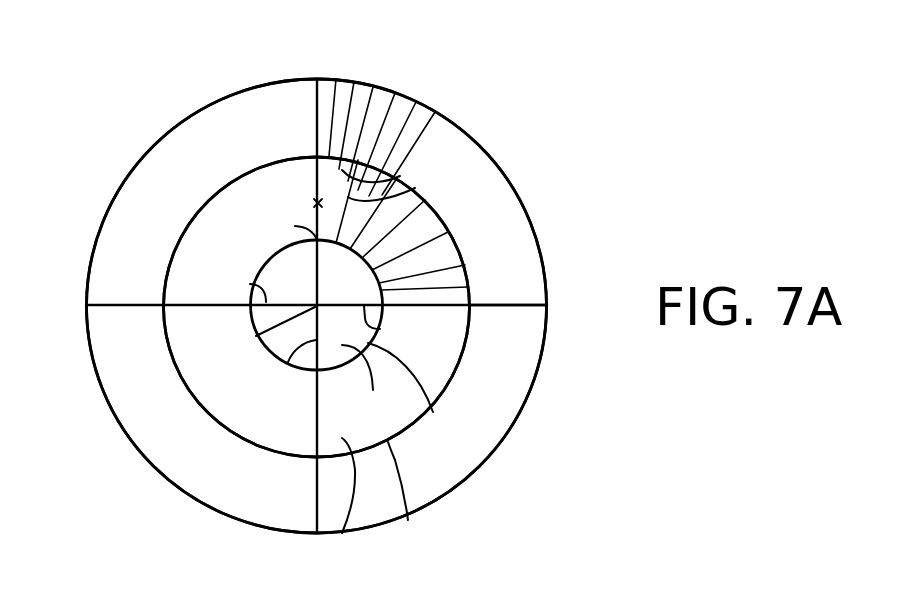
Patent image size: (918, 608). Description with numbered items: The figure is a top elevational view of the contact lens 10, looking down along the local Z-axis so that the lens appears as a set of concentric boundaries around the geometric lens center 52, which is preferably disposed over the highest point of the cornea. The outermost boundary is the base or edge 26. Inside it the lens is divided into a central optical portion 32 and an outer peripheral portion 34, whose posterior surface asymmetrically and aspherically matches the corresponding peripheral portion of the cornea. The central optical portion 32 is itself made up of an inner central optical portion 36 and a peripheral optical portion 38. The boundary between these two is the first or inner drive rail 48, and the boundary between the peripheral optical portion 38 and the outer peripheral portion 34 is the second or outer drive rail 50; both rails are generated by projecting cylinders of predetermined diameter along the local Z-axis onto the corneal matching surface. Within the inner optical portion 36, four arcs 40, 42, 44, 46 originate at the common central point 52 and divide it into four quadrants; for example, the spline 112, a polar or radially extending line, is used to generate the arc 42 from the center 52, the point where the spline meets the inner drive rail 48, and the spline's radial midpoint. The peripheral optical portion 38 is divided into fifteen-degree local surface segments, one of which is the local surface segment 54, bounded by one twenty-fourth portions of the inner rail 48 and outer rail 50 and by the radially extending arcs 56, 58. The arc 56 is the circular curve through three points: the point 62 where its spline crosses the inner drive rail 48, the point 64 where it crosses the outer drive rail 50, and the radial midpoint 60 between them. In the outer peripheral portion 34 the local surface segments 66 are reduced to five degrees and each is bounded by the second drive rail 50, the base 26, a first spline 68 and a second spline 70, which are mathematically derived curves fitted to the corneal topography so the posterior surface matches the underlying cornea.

The lens 10 is at (122, 168).
The base or edge 26 is at (522, 413).
The central optical portion 32 is at (217, 418).
The outer peripheral portion 34 is at (125, 398).
The inner central optical portion 36 is at (368, 381).
The peripheral optical portion 38 is at (342, 533).
The arc 40 is at (316, 264).
The arc 42 is at (380, 329).
The arc 44 is at (288, 362).
The arc 46 is at (250, 284).
The first or inner drive rail 48 is at (430, 405).
The second or outer drive rail 50 is at (408, 520).
The geometric lens center 52 is at (256, 336).
The local surface segment 54 is at (400, 176).
The arc 56 is at (312, 185).
The arc 58 is at (415, 188).
The radial midpoint 60 is at (306, 203).
The point 62 is at (295, 226).
The point 64 is at (312, 157).
The local surface segment 66 is at (345, 100).
The first spline 68 is at (340, 98).
The second spline 70 is at (360, 101).
The spline 112 is at (500, 304).